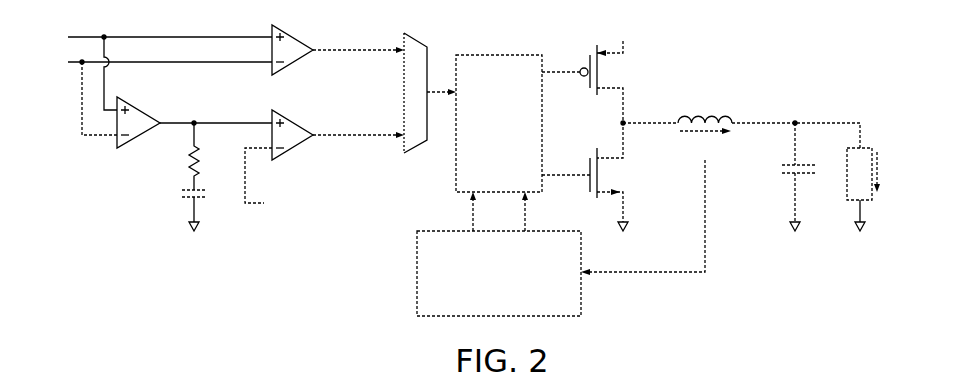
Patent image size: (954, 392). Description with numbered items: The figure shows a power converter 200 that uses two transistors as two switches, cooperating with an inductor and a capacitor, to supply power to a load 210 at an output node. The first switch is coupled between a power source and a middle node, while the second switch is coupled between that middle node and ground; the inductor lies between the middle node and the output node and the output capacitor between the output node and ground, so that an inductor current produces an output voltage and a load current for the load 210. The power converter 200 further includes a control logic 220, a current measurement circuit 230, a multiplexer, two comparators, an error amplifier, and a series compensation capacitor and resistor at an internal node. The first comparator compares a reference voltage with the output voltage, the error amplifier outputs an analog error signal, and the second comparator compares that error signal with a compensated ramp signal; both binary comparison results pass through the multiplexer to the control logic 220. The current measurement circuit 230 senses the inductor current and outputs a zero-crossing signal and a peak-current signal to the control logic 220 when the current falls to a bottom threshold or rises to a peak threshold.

The power converter 200 is at (751, 43).
The load 210 is at (864, 150).
The control logic 220 is at (482, 55).
The current measurement circuit 230 is at (417, 262).